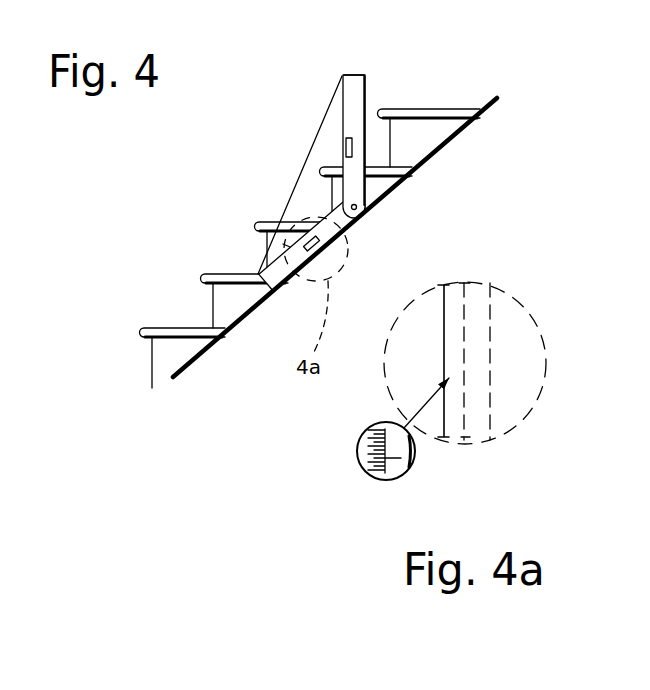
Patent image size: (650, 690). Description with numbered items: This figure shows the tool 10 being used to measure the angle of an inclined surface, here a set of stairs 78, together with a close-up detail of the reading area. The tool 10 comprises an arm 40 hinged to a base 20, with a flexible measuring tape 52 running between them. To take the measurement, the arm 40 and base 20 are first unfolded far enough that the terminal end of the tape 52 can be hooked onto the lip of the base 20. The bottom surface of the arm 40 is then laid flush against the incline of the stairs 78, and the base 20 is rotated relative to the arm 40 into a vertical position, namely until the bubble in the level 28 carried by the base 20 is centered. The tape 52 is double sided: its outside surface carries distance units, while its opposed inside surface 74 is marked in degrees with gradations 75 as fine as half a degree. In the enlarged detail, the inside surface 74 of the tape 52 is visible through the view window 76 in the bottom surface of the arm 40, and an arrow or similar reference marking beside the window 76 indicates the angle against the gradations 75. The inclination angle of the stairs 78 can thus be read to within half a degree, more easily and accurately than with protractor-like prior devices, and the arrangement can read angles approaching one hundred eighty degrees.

In FIG. 4, the tool 10 is at (288, 133).
In FIG. 4, the base 20 is at (352, 95).
In FIG. 4, the level 28 is at (364, 70).
In FIG. 4, the arm 40 is at (345, 233).
In FIG. 4A, the arm 40 is at (393, 451).
In FIG. 4, the flexible measuring tape 52 is at (289, 193).
In FIG. 4A, the flexible measuring tape 52 is at (460, 320).
In FIG. 4A, the inside surface 74 is at (461, 404).
In FIG. 4A, the gradations 75 is at (392, 462).
In FIG. 4, the view window 76 is at (286, 245).
In FIG. 4A, the view window 76 is at (407, 397).
In FIG. 4, the set of stairs 78 is at (457, 137).